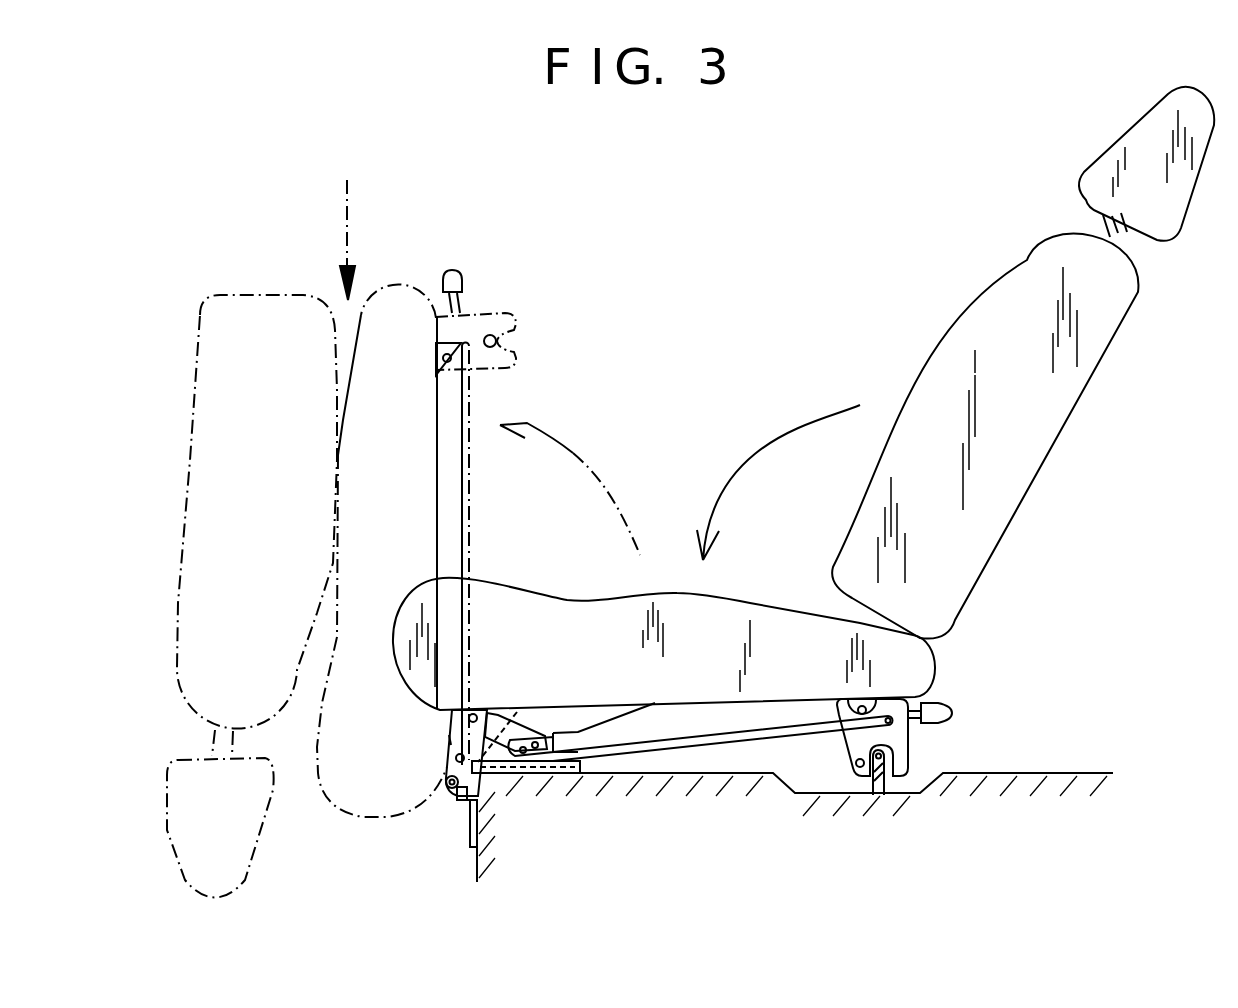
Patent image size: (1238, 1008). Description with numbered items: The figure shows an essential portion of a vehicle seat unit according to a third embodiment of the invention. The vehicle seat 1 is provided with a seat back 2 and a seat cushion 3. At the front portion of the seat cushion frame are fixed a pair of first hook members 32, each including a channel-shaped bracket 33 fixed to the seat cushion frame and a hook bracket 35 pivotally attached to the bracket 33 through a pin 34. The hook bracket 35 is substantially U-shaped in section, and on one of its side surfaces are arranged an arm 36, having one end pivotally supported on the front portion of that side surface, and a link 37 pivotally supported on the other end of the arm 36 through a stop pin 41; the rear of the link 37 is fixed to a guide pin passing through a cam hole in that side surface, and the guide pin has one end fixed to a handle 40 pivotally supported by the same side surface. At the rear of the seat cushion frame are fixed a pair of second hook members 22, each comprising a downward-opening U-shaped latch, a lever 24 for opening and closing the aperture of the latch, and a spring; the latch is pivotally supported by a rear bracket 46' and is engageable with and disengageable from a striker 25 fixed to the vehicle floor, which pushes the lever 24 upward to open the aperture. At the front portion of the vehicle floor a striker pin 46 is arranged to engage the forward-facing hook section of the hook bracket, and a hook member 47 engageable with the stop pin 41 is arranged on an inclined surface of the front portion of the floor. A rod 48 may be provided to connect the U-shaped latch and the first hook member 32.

The vehicle seat 1 is at (810, 339).
The seat back 2 is at (980, 337).
The seat cushion 3 is at (679, 593).
The second hook members 22 is at (937, 748).
The lever 24 is at (947, 708).
The striker 25 is at (882, 776).
The first hook members 32 is at (541, 711).
The channel-shaped bracket 33 is at (449, 712).
The pin 34 is at (487, 710).
The hook bracket 35 is at (448, 738).
The arm 36 is at (447, 768).
The link 37 is at (518, 712).
The handle 40 is at (577, 733).
The stop pin 41 is at (446, 793).
The striker pin 46 is at (536, 806).
The rear bracket 46' is at (822, 678).
The hook member 47 is at (462, 807).
The rod 48 is at (470, 527).